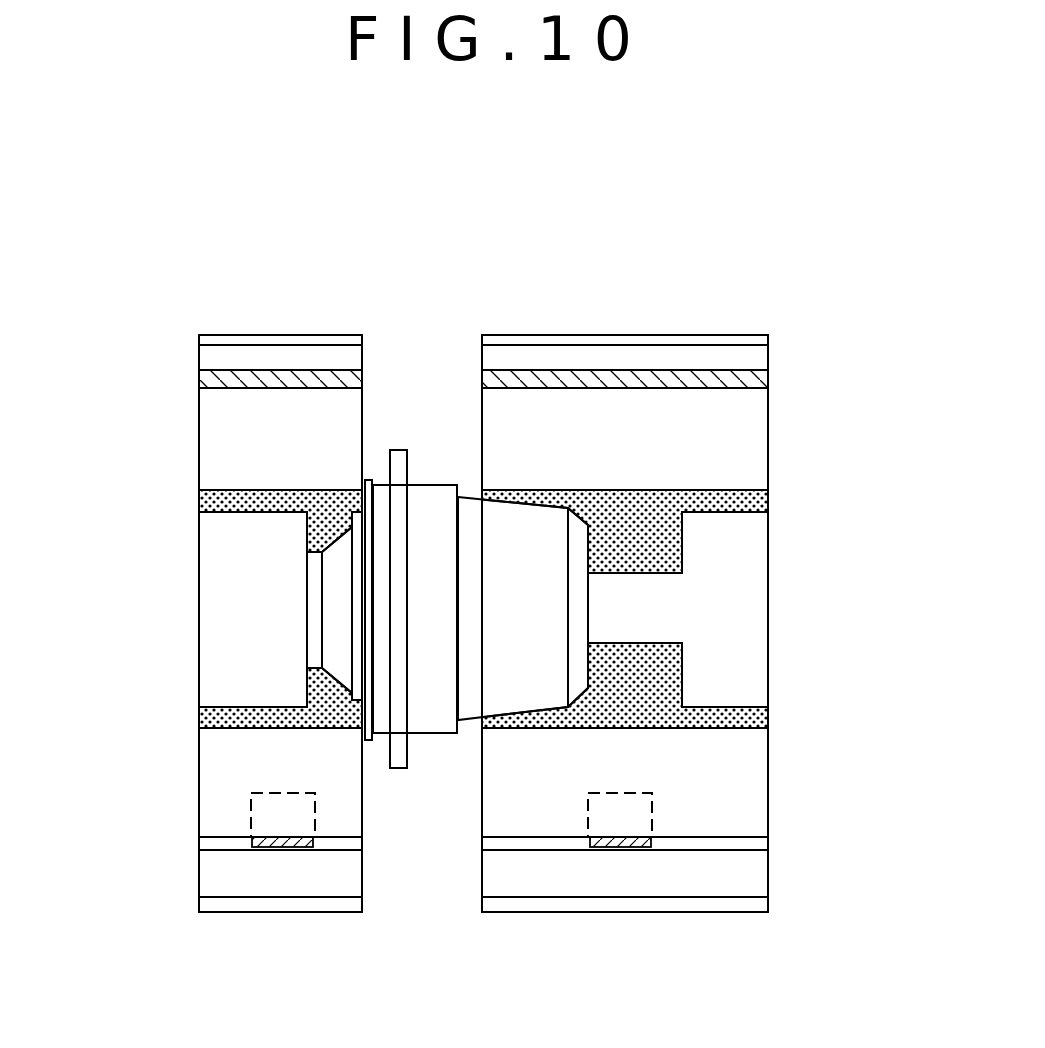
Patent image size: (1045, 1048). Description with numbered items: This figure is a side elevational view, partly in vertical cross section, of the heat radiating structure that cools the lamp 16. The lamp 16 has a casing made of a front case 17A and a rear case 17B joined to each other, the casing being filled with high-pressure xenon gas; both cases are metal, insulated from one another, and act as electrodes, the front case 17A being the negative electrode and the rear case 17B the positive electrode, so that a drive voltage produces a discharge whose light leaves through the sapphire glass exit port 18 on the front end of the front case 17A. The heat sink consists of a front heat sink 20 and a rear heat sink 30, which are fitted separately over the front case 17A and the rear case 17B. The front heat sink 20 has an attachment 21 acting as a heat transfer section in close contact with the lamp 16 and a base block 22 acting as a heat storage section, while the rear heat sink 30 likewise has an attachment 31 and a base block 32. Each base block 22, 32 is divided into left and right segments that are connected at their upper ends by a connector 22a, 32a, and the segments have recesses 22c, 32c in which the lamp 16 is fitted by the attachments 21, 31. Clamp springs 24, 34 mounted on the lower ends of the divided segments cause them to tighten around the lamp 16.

The lamp 16 is at (440, 485).
The front case 17A is at (337, 567).
The rear case 17B is at (520, 542).
The exit port 18 is at (305, 608).
The front heat sink 20 is at (277, 318).
The attachment 21 is at (243, 730).
The base block 22 is at (220, 433).
The connector 22a is at (233, 375).
The recess 22c is at (242, 490).
The clamp spring 24 is at (285, 847).
The rear heat sink 30 is at (623, 318).
The attachment 31 is at (660, 718).
The base block 32 is at (743, 430).
The connector 32a is at (705, 378).
The recess 32c is at (723, 492).
The clamp spring 34 is at (622, 847).